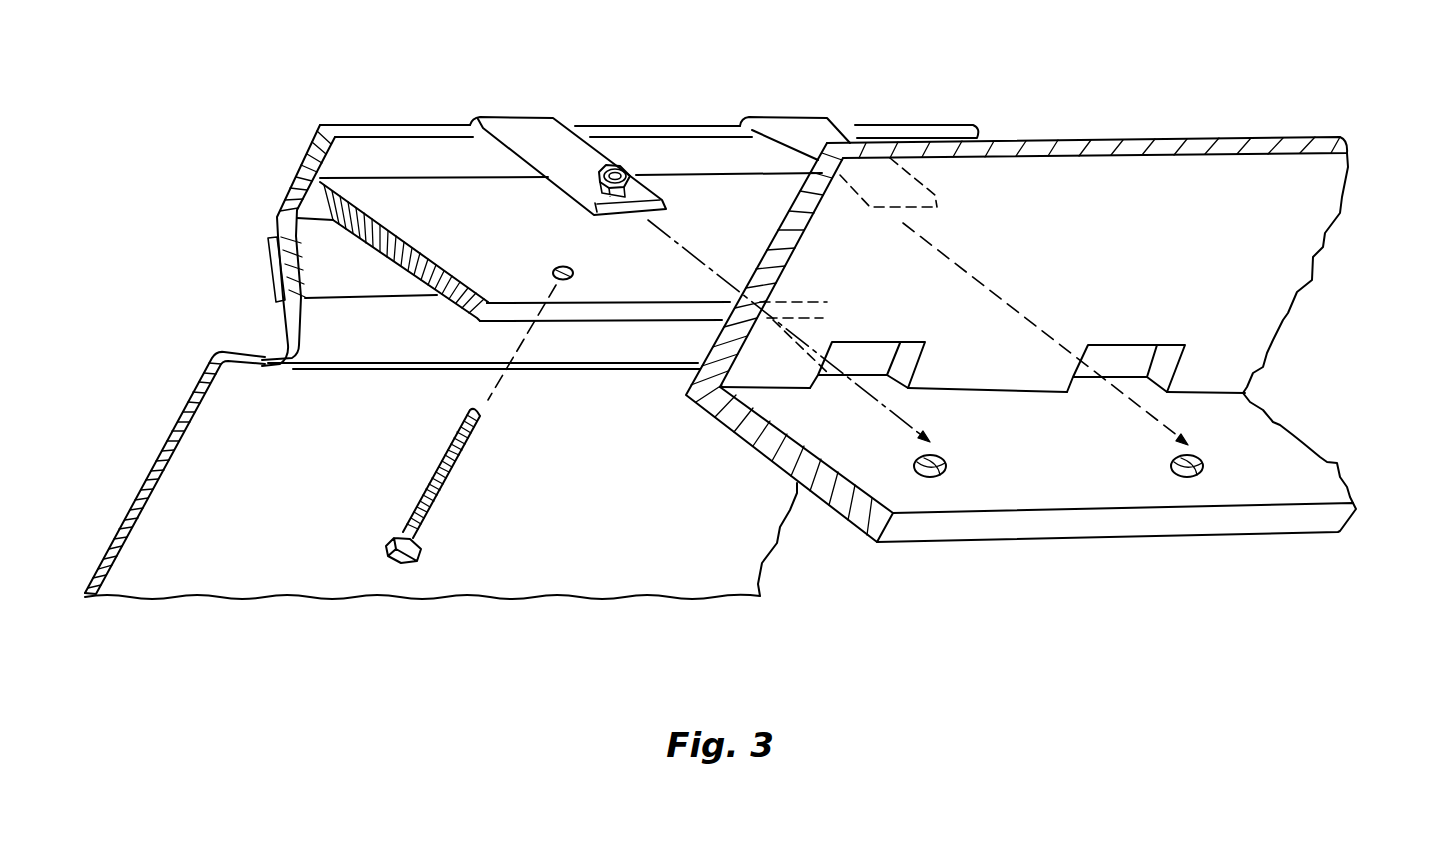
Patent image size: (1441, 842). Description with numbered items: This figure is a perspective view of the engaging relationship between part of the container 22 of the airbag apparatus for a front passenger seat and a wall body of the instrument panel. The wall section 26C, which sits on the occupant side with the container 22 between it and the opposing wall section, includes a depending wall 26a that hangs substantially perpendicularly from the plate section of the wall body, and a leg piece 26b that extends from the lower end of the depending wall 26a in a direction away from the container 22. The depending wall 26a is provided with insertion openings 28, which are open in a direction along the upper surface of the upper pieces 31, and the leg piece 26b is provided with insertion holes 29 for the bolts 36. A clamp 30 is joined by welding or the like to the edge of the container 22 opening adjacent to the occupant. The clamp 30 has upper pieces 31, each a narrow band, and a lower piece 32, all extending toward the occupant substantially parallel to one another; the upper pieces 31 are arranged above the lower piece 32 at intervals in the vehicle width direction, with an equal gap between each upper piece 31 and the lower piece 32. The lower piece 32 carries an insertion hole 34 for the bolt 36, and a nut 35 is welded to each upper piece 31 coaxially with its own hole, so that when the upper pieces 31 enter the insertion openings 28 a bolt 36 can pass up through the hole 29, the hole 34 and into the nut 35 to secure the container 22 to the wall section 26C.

The container 22 is at (573, 570).
The wall section 26C is at (1367, 209).
The depending wall 26a is at (1290, 320).
The leg piece 26b is at (1327, 462).
The insertion opening 28 is at (863, 360).
The insertion hole 29 is at (945, 455).
The clamp 30 is at (362, 112).
The upper piece 31 is at (537, 120).
The lower piece 32 is at (606, 284).
The insertion hole 34 is at (556, 268).
The nut 35 is at (633, 167).
The bolt 36 is at (410, 517).